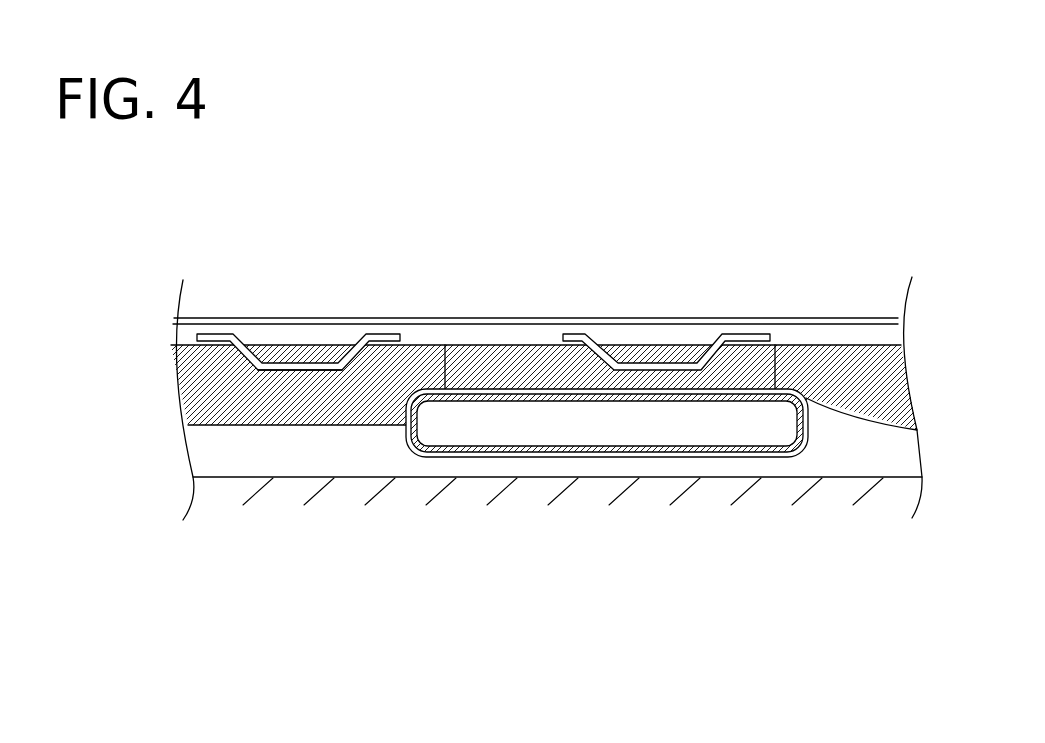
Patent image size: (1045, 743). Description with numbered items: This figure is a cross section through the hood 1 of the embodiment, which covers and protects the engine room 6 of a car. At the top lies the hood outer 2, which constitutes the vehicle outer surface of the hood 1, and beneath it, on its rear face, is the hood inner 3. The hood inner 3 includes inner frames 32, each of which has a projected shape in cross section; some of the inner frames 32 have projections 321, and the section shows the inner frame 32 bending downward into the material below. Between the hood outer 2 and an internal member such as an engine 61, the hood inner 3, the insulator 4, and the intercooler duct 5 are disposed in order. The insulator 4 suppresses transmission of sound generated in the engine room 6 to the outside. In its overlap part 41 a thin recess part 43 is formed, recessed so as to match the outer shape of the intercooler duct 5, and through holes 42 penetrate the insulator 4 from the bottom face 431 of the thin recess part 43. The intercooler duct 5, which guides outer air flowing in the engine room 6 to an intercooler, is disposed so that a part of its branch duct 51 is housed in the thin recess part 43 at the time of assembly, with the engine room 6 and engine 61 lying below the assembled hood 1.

The hood 1 is at (802, 263).
The hood outer 2 is at (296, 318).
The hood inner 3 is at (634, 318).
The inner frame 32 is at (340, 333).
The projection 321 is at (303, 372).
The insulator 4 is at (378, 410).
The overlap part 41 is at (605, 395).
The through hole 42 is at (515, 345).
The thin recess part 43 is at (420, 408).
The bottom face 431 is at (548, 400).
The intercooler duct 5 is at (683, 458).
The branch duct 51 is at (815, 435).
The engine room 6 is at (254, 441).
The engine 61 is at (780, 490).